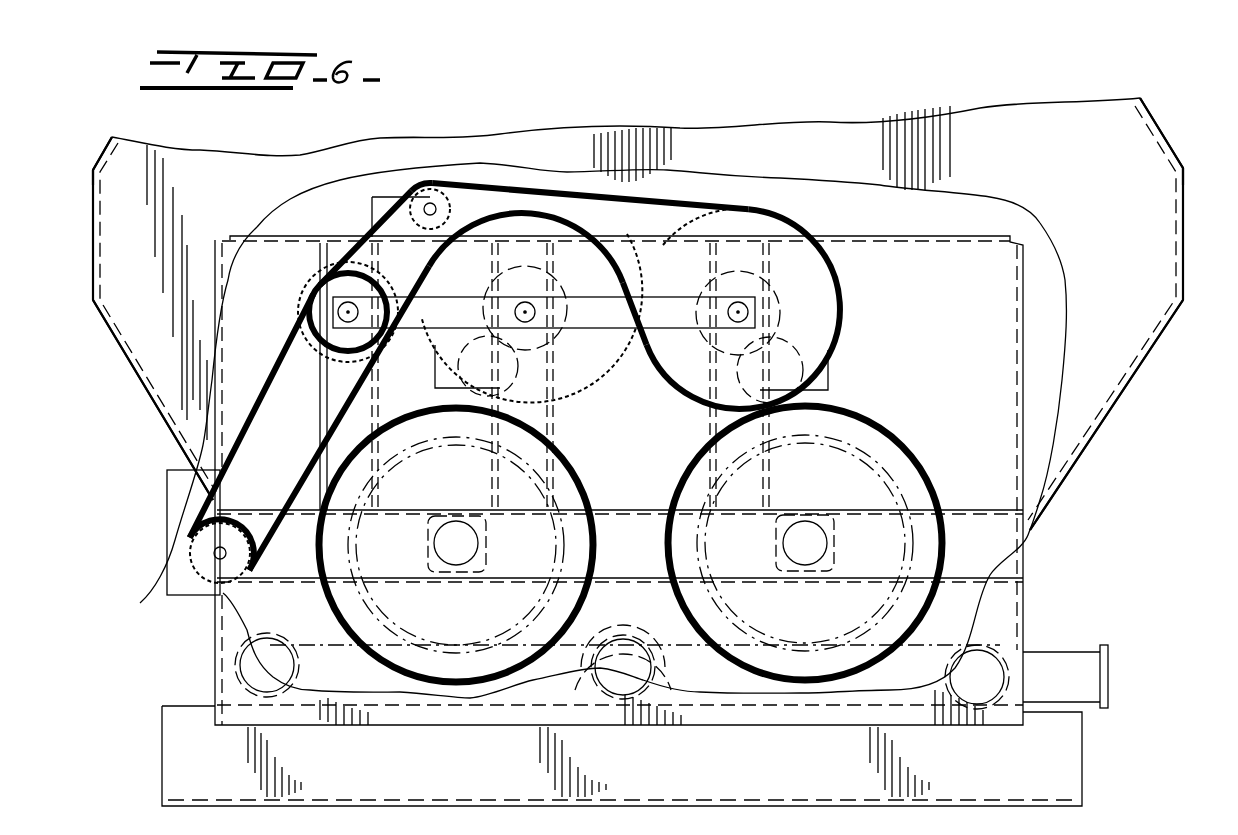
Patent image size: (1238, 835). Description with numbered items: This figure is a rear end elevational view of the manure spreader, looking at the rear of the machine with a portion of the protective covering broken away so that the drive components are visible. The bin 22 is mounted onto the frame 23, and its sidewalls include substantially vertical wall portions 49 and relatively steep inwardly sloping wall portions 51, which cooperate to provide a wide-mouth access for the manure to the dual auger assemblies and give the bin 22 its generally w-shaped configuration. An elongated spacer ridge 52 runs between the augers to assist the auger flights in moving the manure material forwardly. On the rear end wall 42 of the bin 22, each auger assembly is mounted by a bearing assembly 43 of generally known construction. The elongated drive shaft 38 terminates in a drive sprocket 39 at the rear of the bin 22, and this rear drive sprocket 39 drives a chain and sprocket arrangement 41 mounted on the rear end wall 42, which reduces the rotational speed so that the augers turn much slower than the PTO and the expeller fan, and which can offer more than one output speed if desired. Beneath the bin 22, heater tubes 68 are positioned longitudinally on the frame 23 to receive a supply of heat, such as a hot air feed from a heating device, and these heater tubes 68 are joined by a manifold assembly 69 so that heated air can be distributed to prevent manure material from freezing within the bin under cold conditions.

The bin 22 is at (93, 290).
The frame 23 is at (1085, 740).
The elongated drive shaft 38 is at (218, 555).
The drive sprocket 39 is at (200, 548).
The chain and sprocket arrangement 41 is at (818, 224).
The rear end wall 42 is at (1102, 165).
The bearing assembly 43 is at (428, 533).
The substantially vertical wall portions 49 is at (97, 166).
The inwardly sloping wall portions 51 is at (143, 385).
The elongated spacer ridge 52 is at (628, 622).
The heater tubes 68 is at (237, 667).
The manifold assembly 69 is at (1065, 662).